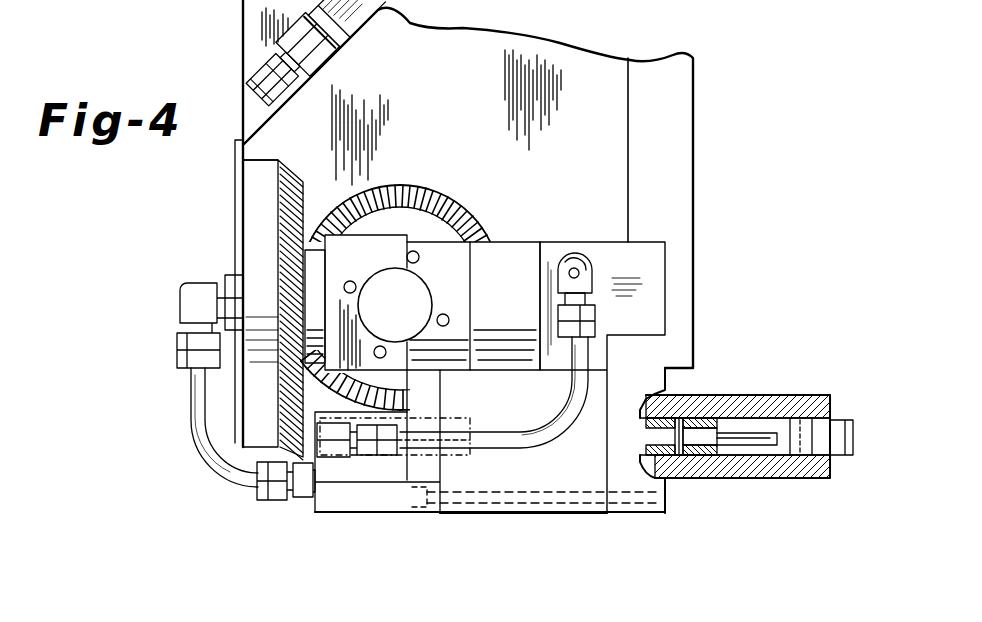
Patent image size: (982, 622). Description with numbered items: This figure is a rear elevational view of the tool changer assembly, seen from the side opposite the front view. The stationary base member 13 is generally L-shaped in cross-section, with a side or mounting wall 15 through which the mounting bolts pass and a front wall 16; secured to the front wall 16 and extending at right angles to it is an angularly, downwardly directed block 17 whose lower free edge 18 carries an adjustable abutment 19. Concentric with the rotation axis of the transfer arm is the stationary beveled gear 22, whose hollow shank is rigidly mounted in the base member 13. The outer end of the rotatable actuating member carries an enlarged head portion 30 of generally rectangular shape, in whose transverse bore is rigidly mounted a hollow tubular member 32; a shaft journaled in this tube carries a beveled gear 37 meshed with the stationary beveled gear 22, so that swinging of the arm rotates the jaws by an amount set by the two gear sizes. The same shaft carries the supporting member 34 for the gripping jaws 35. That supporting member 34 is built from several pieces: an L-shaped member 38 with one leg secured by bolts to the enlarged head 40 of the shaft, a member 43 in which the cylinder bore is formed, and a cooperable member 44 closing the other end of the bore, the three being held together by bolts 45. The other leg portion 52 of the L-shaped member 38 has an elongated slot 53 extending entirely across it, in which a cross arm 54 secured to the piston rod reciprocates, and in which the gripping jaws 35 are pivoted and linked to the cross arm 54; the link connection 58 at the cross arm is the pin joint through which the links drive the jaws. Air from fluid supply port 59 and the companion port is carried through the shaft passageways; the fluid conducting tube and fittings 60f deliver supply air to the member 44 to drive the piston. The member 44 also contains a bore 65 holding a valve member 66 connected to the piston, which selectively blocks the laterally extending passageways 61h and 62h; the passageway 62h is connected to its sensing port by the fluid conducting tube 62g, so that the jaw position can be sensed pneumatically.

The base member 13 is at (693, 166).
The side or mounting wall 15 is at (682, 120).
The front wall 16 is at (251, 33).
The angularly downwardly directed block 17 is at (357, 30).
The lower free edge 18 is at (331, 68).
The adjustable abutment 19 is at (292, 104).
The beveled gear 22 is at (403, 193).
The enlarged head portion 30 is at (464, 203).
The hollow tubular member 32 is at (507, 250).
The supporting member 34 is at (500, 513).
The gripping jaws 35 is at (848, 460).
The beveled gear 37 is at (255, 218).
The L-shaped member 38 is at (651, 277).
The enlarged head 40 is at (570, 250).
The member 43 is at (543, 503).
The cooperable member 44 is at (390, 513).
The bolts 45 is at (463, 507).
The other leg portion 52 is at (751, 394).
The elongated slot 53 is at (781, 421).
The cross arm 54 is at (703, 455).
The retaining ring 58 is at (679, 457).
The fluid supply port 59 is at (756, 452).
The fluid conducting tube with fittings 60f is at (198, 431).
The laterally extending passageway 61h is at (437, 415).
The fluid conducting tube 62g is at (513, 445).
The laterally extending passageway 62h is at (337, 488).
The bore 65 is at (654, 4).
The valve member 66 is at (517, 5).